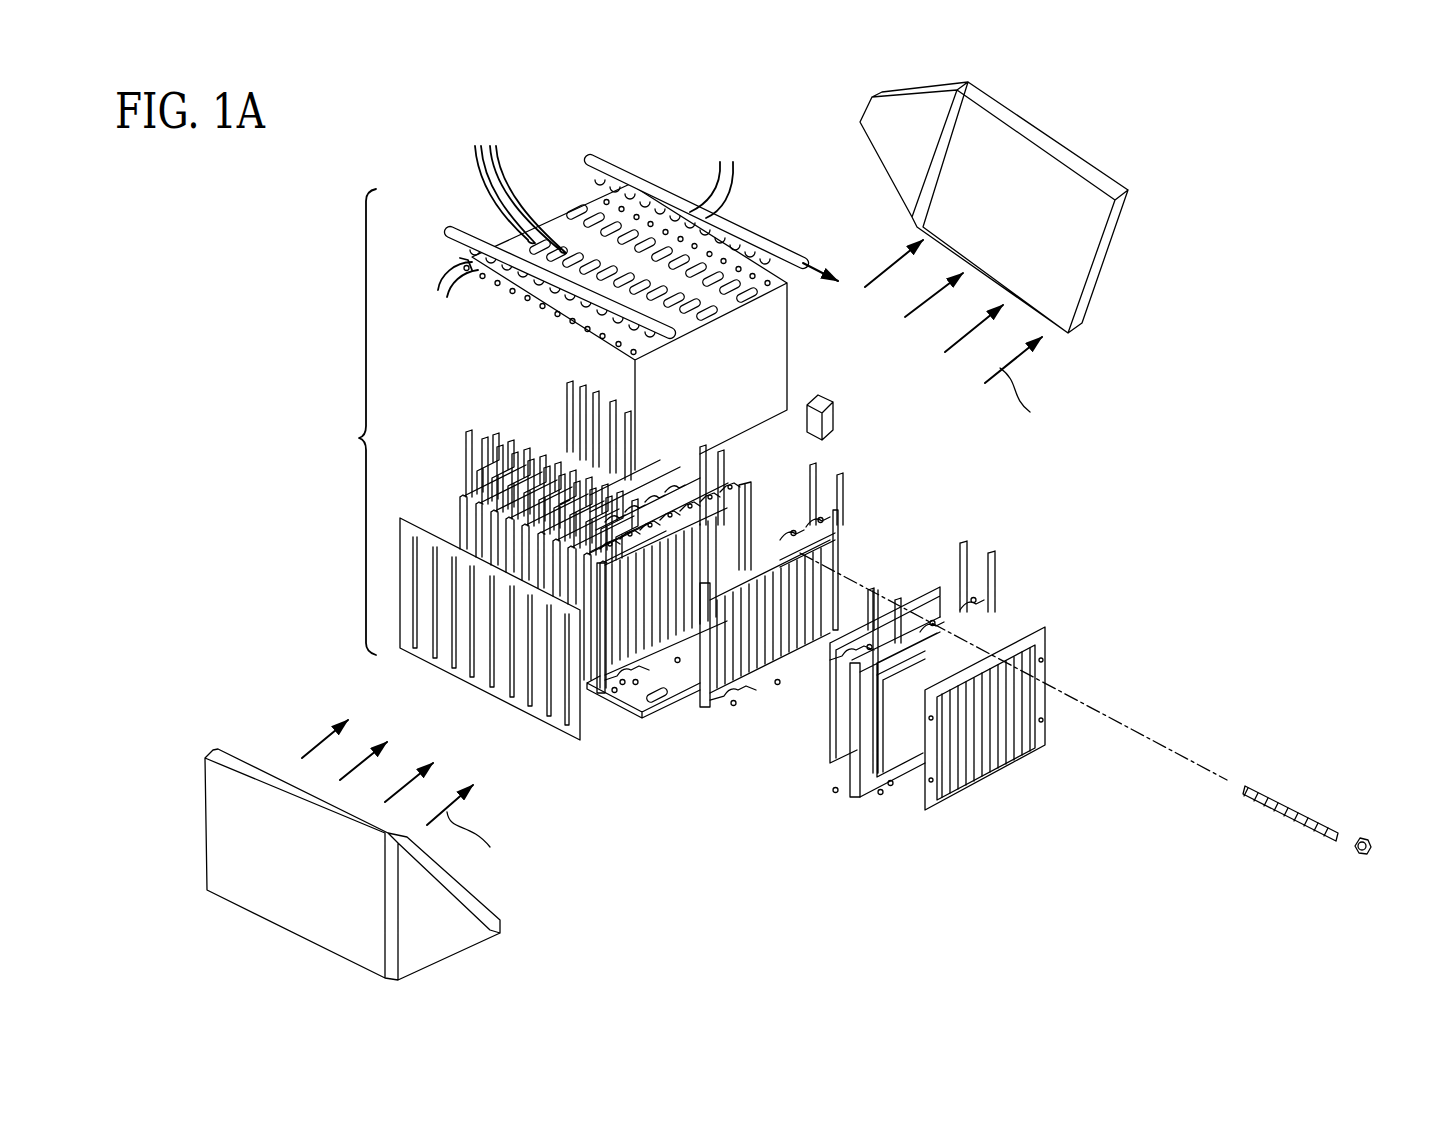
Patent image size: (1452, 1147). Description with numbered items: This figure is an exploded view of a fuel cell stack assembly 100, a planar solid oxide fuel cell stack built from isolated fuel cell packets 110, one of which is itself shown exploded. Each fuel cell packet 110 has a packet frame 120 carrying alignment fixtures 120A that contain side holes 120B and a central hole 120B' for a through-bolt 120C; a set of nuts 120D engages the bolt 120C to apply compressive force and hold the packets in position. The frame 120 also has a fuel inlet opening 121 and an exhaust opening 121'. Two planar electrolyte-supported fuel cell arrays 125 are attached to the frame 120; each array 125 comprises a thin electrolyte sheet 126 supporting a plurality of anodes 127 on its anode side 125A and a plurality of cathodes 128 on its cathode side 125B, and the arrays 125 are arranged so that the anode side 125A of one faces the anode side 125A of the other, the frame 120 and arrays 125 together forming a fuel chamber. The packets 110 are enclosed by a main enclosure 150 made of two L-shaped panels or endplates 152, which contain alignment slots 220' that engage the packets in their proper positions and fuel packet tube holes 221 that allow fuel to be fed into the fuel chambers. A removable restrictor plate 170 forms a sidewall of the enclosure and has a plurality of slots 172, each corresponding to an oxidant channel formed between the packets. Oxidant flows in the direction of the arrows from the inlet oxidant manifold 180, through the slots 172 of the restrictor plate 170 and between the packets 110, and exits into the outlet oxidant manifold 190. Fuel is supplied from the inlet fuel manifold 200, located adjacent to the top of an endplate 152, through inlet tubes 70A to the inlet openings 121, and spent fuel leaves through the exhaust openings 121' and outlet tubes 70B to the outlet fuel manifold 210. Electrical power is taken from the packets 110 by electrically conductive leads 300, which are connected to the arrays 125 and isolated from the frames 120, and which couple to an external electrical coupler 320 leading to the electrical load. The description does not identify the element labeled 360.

The fuel cell stack assembly 100 is at (1184, 134).
The fuel cell packet 110 is at (740, 706).
The packet frame 120 is at (860, 522).
The alignment fixtures 120A is at (940, 590).
The side holes 120B is at (669, 708).
The central hole 120B' is at (802, 569).
The through-bolt 120C is at (1280, 799).
The nuts 120D is at (1358, 840).
The packet frame fuel inlet opening 121 is at (552, 496).
The packet frame exhaust opening 121' is at (847, 492).
The fuel cell array 125 is at (1055, 652).
The anode side 125A is at (1058, 630).
The cathode side 125B is at (845, 572).
The electrolyte sheet 126 is at (1060, 750).
The anodes 127 is at (836, 724).
The cathodes 128 is at (1033, 707).
The main enclosure 150 is at (341, 422).
The L-shaped panels (endplates) 152 is at (789, 315).
The removable restrictor plate 170 is at (398, 660).
The slots 172 is at (470, 652).
The inlet oxidant manifold 180 is at (283, 907).
The outlet oxidant manifold 190 is at (1107, 249).
The inlet fuel manifold 200 is at (456, 229).
The outlet fuel manifold 210 is at (775, 247).
The alignment slots 220' is at (513, 184).
The fuel packet tube holes 221 is at (583, 186).
The power takeoff lead 300 is at (487, 434).
The external electrical coupler 320 is at (848, 412).
The frame window 360 is at (1010, 612).
The fuel manifold inlet tubes 70A is at (442, 298).
The connection tubes (outlet tubes) 70B is at (716, 174).